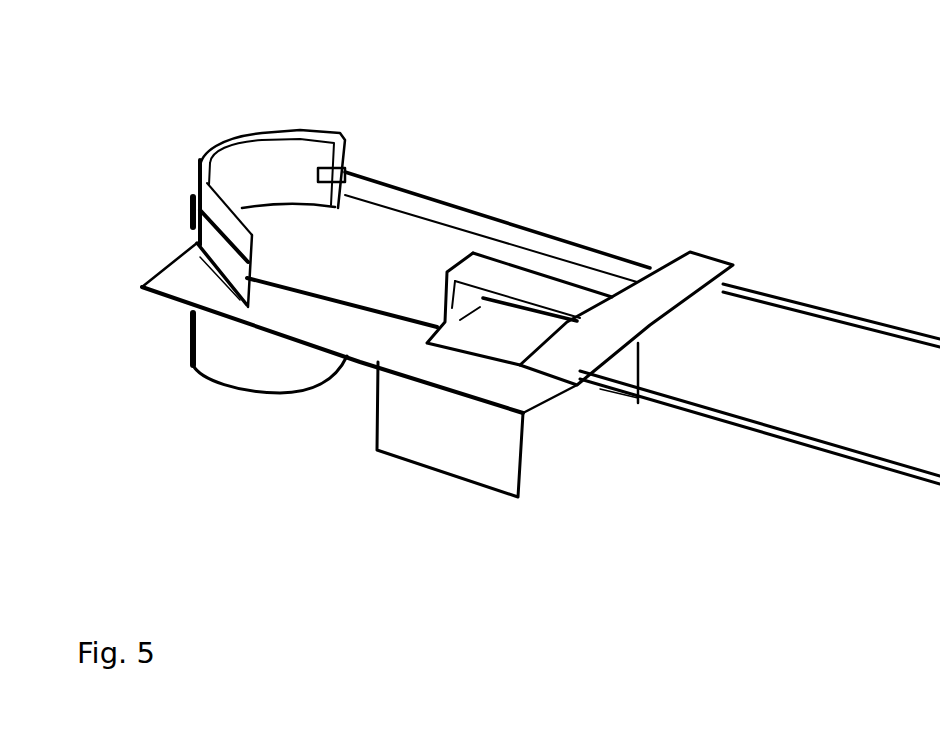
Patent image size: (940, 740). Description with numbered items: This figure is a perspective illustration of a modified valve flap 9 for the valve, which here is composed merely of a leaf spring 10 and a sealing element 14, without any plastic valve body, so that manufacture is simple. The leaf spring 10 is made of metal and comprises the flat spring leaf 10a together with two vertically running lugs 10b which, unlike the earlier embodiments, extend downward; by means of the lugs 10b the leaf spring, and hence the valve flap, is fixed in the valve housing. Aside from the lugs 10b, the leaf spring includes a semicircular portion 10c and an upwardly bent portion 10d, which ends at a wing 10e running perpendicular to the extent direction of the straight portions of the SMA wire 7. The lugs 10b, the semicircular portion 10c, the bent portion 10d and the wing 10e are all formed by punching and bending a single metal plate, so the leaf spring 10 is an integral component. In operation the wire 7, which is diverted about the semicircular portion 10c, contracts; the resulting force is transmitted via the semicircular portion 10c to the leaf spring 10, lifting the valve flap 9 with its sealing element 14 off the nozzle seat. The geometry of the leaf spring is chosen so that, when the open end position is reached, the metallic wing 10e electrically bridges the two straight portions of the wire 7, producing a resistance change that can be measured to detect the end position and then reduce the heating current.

The valve flap 9 is at (623, 123).
The SMA wire 7 is at (847, 320).
The leaf spring 10 is at (363, 365).
The spring leaf 10a is at (141, 285).
The lugs 10b is at (625, 366).
The semicircular portion 10c is at (258, 123).
The upwardly bent portion 10d is at (493, 270).
The wing 10e is at (693, 272).
The sealing element 14 is at (230, 368).